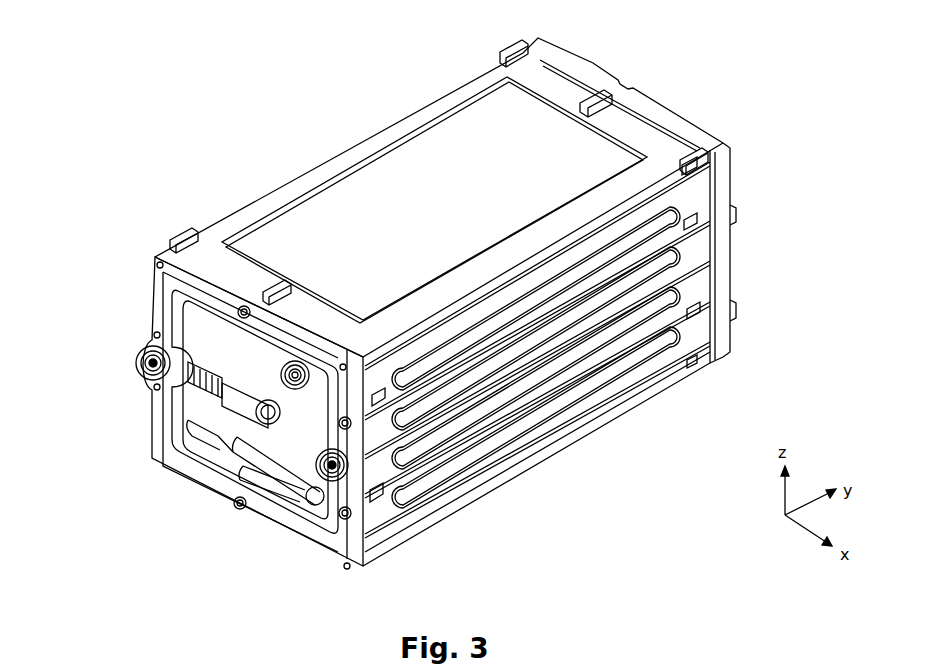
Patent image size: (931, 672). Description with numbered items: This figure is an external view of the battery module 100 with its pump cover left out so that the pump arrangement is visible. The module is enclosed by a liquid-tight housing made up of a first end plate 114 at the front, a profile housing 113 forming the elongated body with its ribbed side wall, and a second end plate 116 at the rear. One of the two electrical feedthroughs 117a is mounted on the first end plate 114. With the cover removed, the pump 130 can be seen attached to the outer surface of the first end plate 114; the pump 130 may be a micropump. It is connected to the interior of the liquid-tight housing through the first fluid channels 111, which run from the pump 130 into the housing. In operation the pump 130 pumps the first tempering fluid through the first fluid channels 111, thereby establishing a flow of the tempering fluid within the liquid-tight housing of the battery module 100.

The battery module 100 is at (231, 66).
The first fluid channels 111 is at (270, 478).
The profile housing 113 is at (557, 422).
The first end plate 114 is at (352, 528).
The second end plate 116 is at (720, 317).
The electrical feedthrough 117a is at (283, 372).
The pump 130 is at (192, 377).